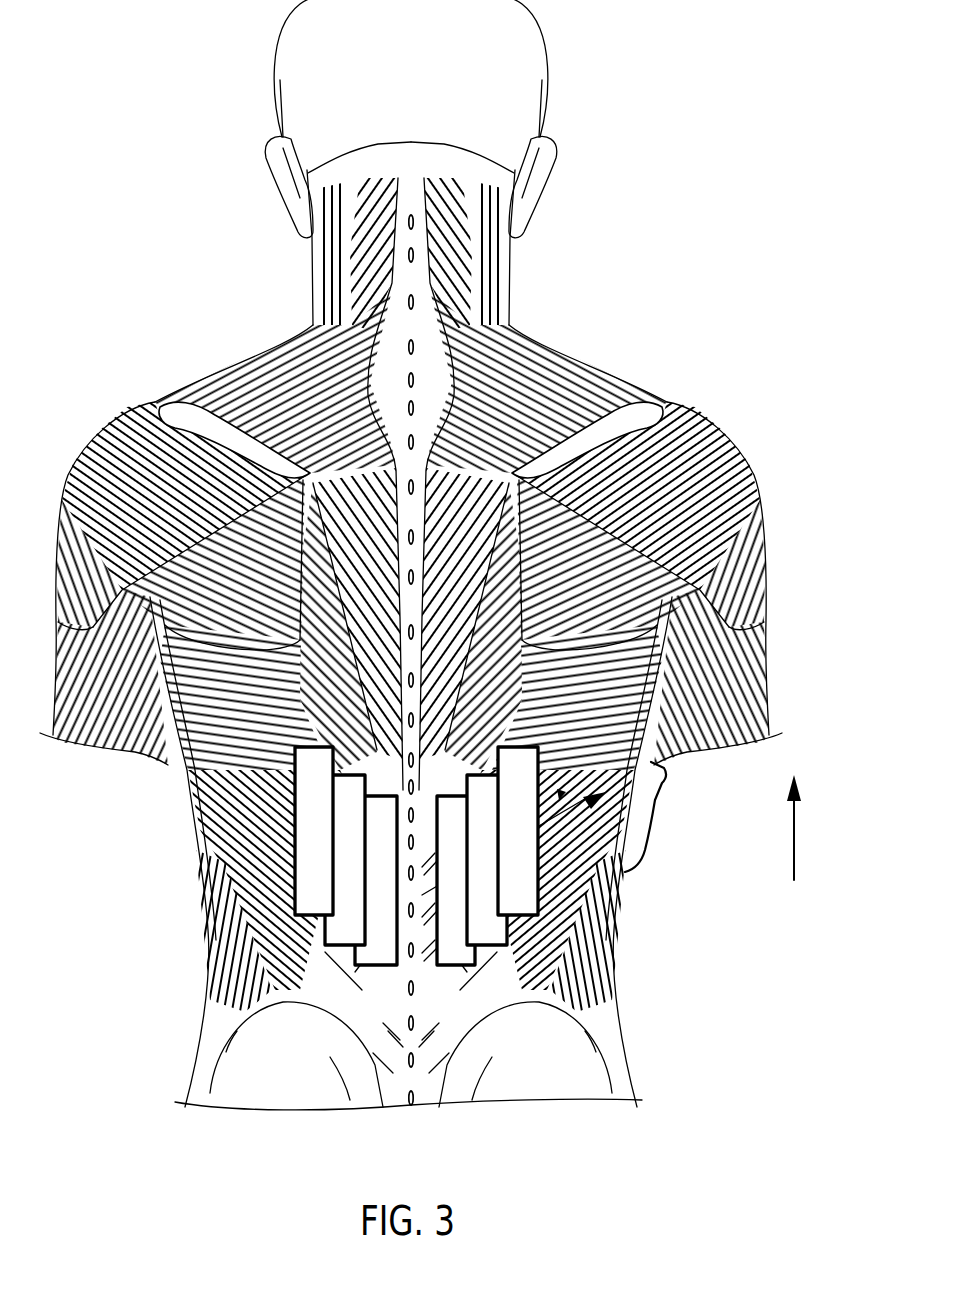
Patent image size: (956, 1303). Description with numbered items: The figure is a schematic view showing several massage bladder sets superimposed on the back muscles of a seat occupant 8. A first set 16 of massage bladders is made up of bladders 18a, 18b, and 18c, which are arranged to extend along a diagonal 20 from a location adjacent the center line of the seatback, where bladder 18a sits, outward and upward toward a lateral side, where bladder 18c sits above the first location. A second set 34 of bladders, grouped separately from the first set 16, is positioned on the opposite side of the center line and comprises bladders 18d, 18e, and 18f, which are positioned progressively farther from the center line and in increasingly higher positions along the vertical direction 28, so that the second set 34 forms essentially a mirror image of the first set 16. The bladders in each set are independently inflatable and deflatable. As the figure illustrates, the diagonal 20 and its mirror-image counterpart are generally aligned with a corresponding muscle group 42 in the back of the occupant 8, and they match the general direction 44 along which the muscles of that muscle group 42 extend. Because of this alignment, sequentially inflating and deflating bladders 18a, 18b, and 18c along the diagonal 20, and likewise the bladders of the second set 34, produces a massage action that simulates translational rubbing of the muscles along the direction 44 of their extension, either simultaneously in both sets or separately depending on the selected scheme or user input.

The occupant 8 is at (607, 324).
The first set of massage bladders 16 is at (580, 738).
The bladder 18a is at (532, 898).
The bladder 18b is at (500, 930).
The bladder 18c is at (520, 993).
The bladder 18d is at (355, 962).
The bladder 18e is at (335, 925).
The bladder 18f is at (312, 858).
The diagonal 20 is at (538, 853).
The vertical direction 28 is at (796, 840).
The second set of bladders 34 is at (255, 785).
The muscle group 42 is at (661, 817).
The direction 44 is at (562, 820).